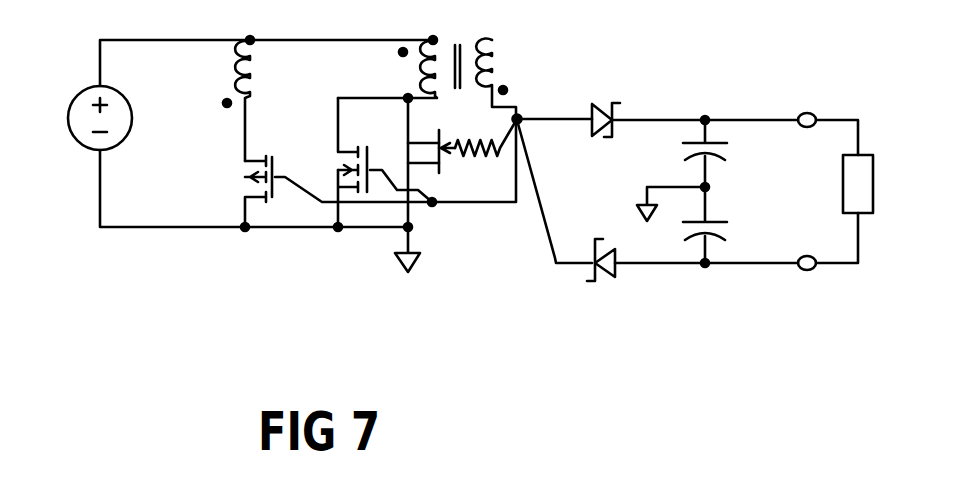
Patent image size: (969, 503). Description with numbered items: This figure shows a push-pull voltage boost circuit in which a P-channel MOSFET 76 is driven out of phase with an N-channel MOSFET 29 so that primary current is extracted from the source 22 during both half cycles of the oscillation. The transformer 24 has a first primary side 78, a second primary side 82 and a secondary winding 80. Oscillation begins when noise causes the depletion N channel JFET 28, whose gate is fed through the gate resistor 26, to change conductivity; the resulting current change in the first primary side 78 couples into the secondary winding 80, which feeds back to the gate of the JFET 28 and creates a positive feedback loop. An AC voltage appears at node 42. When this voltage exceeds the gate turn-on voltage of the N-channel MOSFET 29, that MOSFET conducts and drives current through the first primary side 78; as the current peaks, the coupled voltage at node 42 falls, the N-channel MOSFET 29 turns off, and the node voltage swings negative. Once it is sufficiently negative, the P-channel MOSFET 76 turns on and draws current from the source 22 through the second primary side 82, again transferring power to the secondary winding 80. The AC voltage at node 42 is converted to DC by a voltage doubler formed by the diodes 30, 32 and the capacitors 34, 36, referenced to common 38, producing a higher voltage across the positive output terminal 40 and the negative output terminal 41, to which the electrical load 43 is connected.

The source 22 is at (77, 143).
The transformer 24 is at (495, 35).
The gate resistor 26 is at (476, 136).
The depletion N channel JFET 28 is at (445, 170).
The N-channel enhancement MOSFET 29 is at (373, 150).
The diode 30 is at (600, 97).
The diode 32 is at (612, 285).
The capacitor 34 is at (720, 158).
The capacitor 36 is at (722, 232).
The common 38 is at (393, 265).
The positive output terminal from voltage step up circuit 40 is at (800, 112).
The negative output terminal from voltage step up circuit 41 is at (805, 275).
The node 42 is at (527, 107).
The electrical load 43 is at (840, 183).
The P-channel enhancement MOSFET 76 is at (277, 170).
The first primary side of transformer 78 is at (412, 75).
The secondary winding of transformer 80 is at (500, 58).
The second primary side of transformer 82 is at (230, 65).